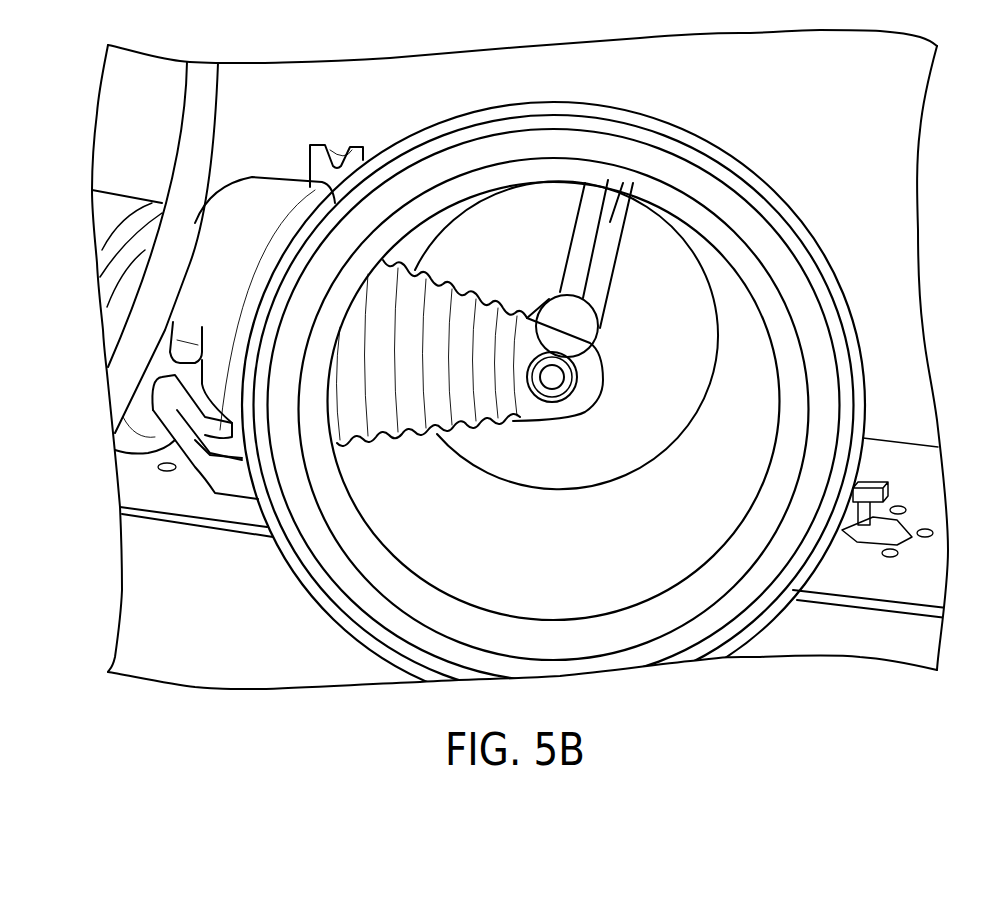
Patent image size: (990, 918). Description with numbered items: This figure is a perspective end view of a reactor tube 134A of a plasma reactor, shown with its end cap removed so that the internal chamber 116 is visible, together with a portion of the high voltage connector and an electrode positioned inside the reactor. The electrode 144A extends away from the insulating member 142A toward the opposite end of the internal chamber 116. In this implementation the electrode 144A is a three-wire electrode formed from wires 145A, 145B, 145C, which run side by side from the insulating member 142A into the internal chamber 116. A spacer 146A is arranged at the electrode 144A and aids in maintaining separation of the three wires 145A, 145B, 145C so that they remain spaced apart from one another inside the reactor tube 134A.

The reactor tube 134A is at (788, 217).
The internal chamber 116 is at (697, 388).
The insulating member 142A is at (417, 413).
The electrode 144A is at (577, 241).
The wire 145A is at (577, 213).
The wire 145B is at (616, 198).
The wire 145C is at (621, 245).
The spacer 146A is at (578, 322).